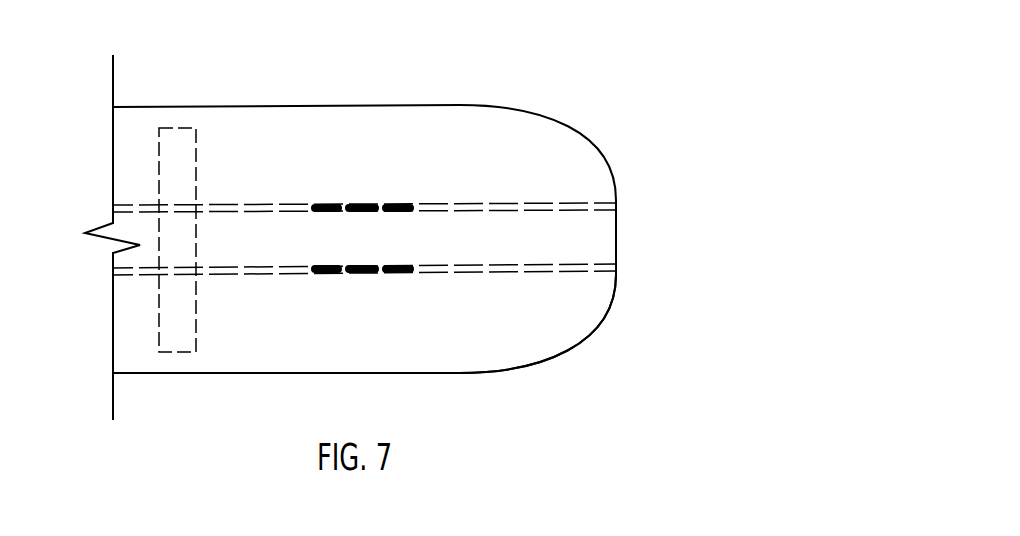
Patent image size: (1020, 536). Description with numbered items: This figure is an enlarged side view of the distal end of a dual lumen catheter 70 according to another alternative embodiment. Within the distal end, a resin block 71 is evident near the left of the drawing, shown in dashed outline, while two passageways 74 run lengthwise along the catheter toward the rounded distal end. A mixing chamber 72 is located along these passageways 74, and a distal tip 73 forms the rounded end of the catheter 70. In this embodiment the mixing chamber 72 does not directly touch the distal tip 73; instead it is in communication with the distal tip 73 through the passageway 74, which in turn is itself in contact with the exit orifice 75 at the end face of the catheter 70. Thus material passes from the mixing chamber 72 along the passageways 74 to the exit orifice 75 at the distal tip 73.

The catheter 70 is at (397, 82).
The resin block 71 is at (180, 138).
The mixing chamber 72 is at (363, 245).
The distal tip 73 is at (558, 316).
The passageways 74 is at (592, 228).
The exit orifice 75 is at (616, 239).